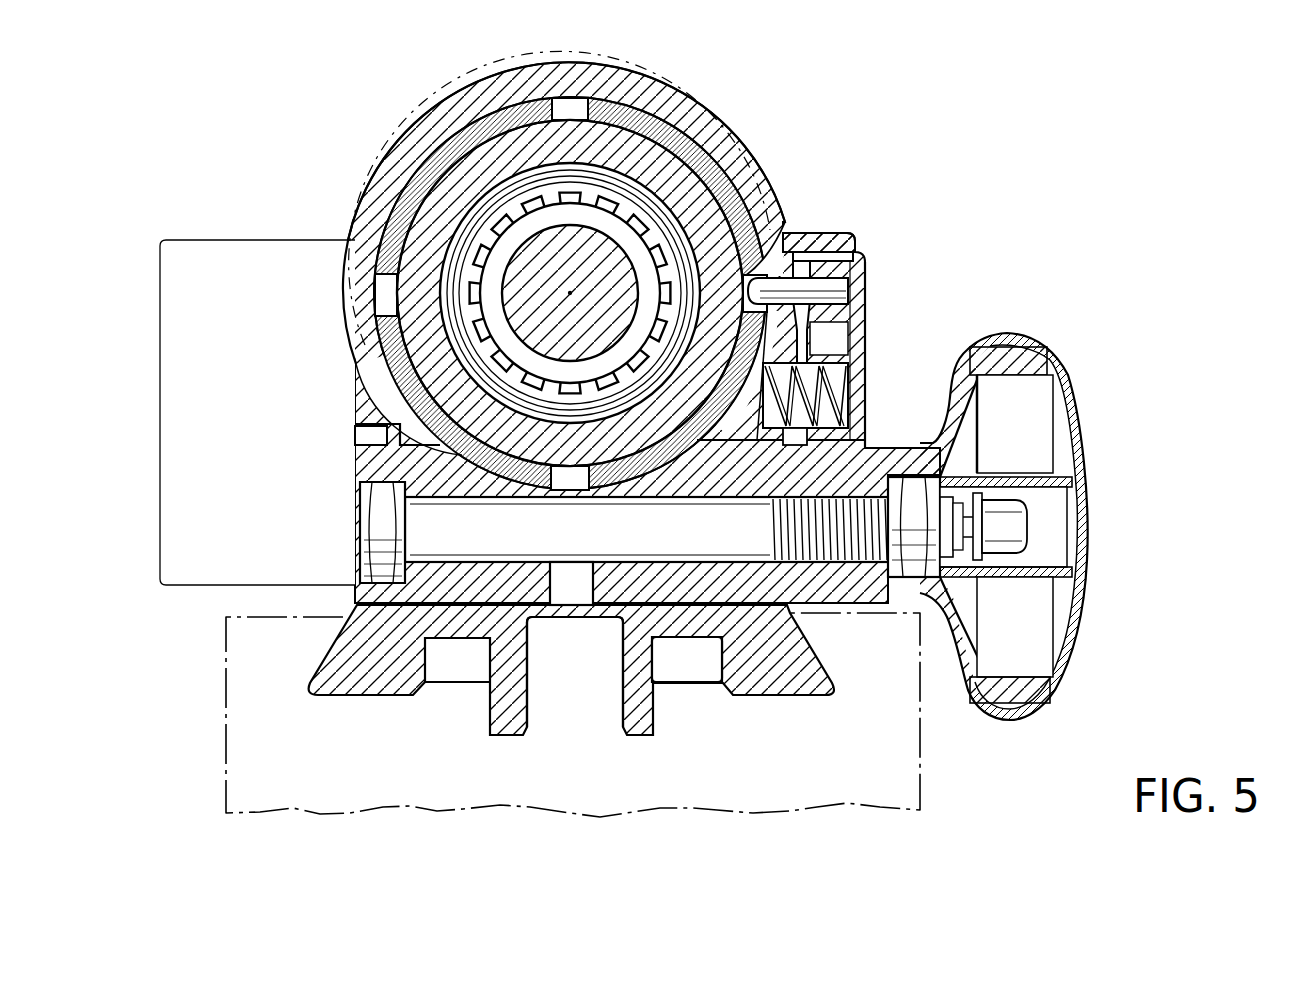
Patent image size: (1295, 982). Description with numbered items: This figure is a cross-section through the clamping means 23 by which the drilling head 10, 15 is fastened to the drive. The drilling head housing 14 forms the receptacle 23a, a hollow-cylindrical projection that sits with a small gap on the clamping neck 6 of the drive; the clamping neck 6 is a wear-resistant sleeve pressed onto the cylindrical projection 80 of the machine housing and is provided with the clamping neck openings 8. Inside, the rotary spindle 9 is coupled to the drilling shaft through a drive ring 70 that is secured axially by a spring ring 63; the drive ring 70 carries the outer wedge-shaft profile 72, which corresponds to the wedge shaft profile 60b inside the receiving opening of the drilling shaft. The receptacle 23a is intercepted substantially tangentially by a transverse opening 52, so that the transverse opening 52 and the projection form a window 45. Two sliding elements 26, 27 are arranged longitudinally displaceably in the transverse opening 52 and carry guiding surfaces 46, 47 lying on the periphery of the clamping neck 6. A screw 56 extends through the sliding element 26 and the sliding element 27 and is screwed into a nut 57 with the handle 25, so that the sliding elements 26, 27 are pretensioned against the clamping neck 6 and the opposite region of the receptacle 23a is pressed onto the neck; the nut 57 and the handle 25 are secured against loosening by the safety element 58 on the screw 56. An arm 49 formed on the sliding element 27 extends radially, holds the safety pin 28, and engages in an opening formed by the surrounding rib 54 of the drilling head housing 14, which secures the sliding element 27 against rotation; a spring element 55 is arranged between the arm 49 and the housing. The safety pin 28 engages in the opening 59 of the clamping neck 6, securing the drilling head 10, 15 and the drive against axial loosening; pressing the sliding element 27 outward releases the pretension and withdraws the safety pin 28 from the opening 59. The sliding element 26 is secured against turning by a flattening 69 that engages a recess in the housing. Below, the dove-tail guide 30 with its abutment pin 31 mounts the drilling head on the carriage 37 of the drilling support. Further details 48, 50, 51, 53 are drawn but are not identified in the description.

The drilling head 10 is at (519, 199).
The drilling head 15 is at (519, 199).
The receptacle 23a is at (519, 199).
The drilling head housing 14 is at (390, 197).
The clamping neck 6 is at (519, 288).
The drive ring 70 is at (408, 190).
The cylindrical projection 80 is at (653, 166).
The spring ring 63 is at (475, 292).
The wedge-shaft profile 72 is at (443, 293).
The wedge shaft profile 60b is at (443, 293).
The rotary spindle 9 is at (545, 276).
The clamping neck openings 8 is at (772, 266).
The transverse opening 52 is at (385, 420).
The flattening 69 is at (357, 432).
The slot 48 is at (360, 447).
The clamping means 23 is at (861, 296).
The surrounding rib 54 is at (834, 240).
The opening 59 is at (794, 236).
The rod 53 is at (808, 328).
The safety pin 28 is at (832, 290).
The spring element 55 is at (832, 398).
The arm 49 is at (855, 355).
The screw 56 is at (437, 520).
The pin 51 is at (604, 582).
The nut 57 is at (908, 579).
The handle 25 is at (1032, 356).
The safety element 58 is at (1030, 517).
The sliding element 26 is at (447, 590).
The guiding surface 46 is at (497, 478).
The dove-tail guide 30 is at (542, 694).
The guiding surface 47 is at (661, 593).
The recess 50 is at (542, 616).
The window 45 is at (636, 614).
The abutment pin 31 is at (505, 703).
The sliding element 27 is at (708, 594).
The carriage 37 is at (920, 778).